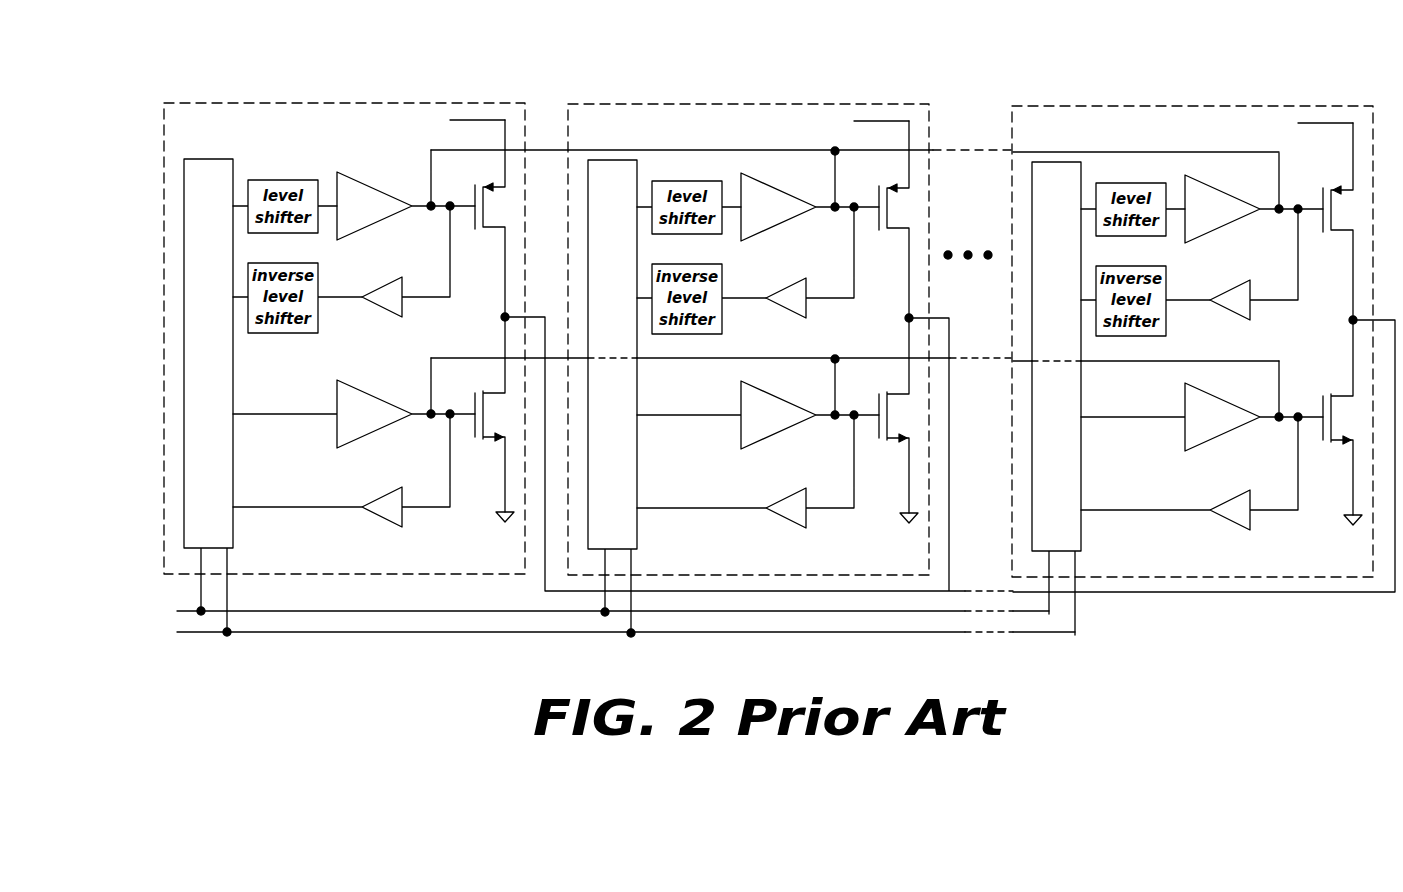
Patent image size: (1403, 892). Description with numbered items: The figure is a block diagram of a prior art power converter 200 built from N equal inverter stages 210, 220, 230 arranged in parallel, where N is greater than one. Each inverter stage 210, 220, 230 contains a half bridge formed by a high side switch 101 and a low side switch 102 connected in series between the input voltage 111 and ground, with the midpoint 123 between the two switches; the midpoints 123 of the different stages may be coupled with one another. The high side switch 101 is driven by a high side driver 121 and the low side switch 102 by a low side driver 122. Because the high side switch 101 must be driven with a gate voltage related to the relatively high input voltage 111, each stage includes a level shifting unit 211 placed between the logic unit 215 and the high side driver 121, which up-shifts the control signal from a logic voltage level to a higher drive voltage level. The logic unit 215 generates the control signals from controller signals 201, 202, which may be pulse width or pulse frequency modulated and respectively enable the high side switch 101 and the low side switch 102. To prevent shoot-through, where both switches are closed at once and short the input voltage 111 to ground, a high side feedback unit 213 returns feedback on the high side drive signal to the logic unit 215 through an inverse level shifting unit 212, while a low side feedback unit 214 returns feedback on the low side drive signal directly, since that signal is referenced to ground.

The power converter 200 is at (1307, 632).
The controller signal 201 is at (184, 634).
The controller signal 202 is at (267, 612).
The inverter stage 210 is at (232, 103).
The inverter stage 220 is at (636, 104).
The inverter stage 230 is at (1080, 106).
The logic unit 215 is at (632, 374).
The level shifting unit 211 is at (709, 196).
The inverse level shifting unit 212 is at (721, 313).
The high side feedback unit 213 is at (830, 263).
The low side feedback unit 214 is at (765, 472).
The high side driver 121 is at (830, 195).
The low side driver 122 is at (778, 403).
The high side switch 101 is at (910, 220).
The low side switch 102 is at (913, 421).
The input voltage 111 is at (901, 99).
The midpoint 123 is at (925, 452).